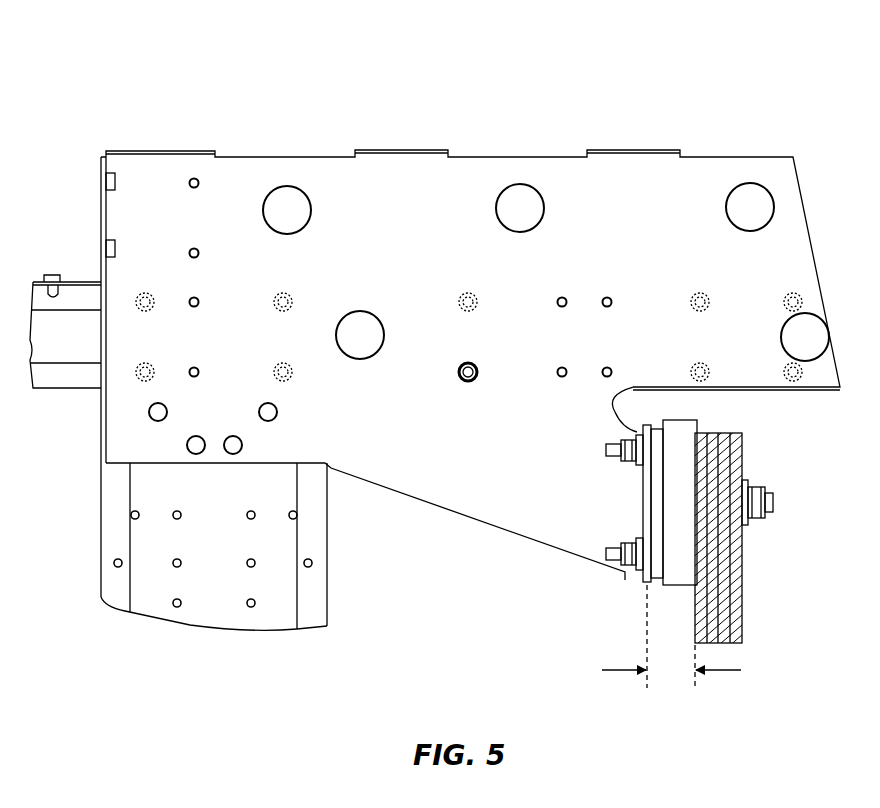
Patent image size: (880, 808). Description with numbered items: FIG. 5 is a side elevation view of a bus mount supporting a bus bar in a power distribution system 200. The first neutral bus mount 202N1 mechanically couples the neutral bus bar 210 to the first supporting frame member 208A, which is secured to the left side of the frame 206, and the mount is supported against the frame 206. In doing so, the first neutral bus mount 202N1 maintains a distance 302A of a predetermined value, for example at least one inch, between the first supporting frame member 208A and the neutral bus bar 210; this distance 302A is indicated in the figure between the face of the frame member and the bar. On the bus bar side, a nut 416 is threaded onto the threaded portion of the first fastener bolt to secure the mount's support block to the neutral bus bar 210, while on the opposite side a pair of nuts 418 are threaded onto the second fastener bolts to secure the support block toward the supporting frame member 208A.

The tool assembly 200 is at (555, 82).
The first supporting frame member 208A is at (713, 157).
The frame 206 is at (70, 390).
The first neutral bus mount 202N1 is at (697, 425).
The neutral bus bar 210 is at (742, 608).
The nut 416 is at (772, 496).
The pair of nuts 418 is at (605, 553).
The distance 302A is at (722, 672).